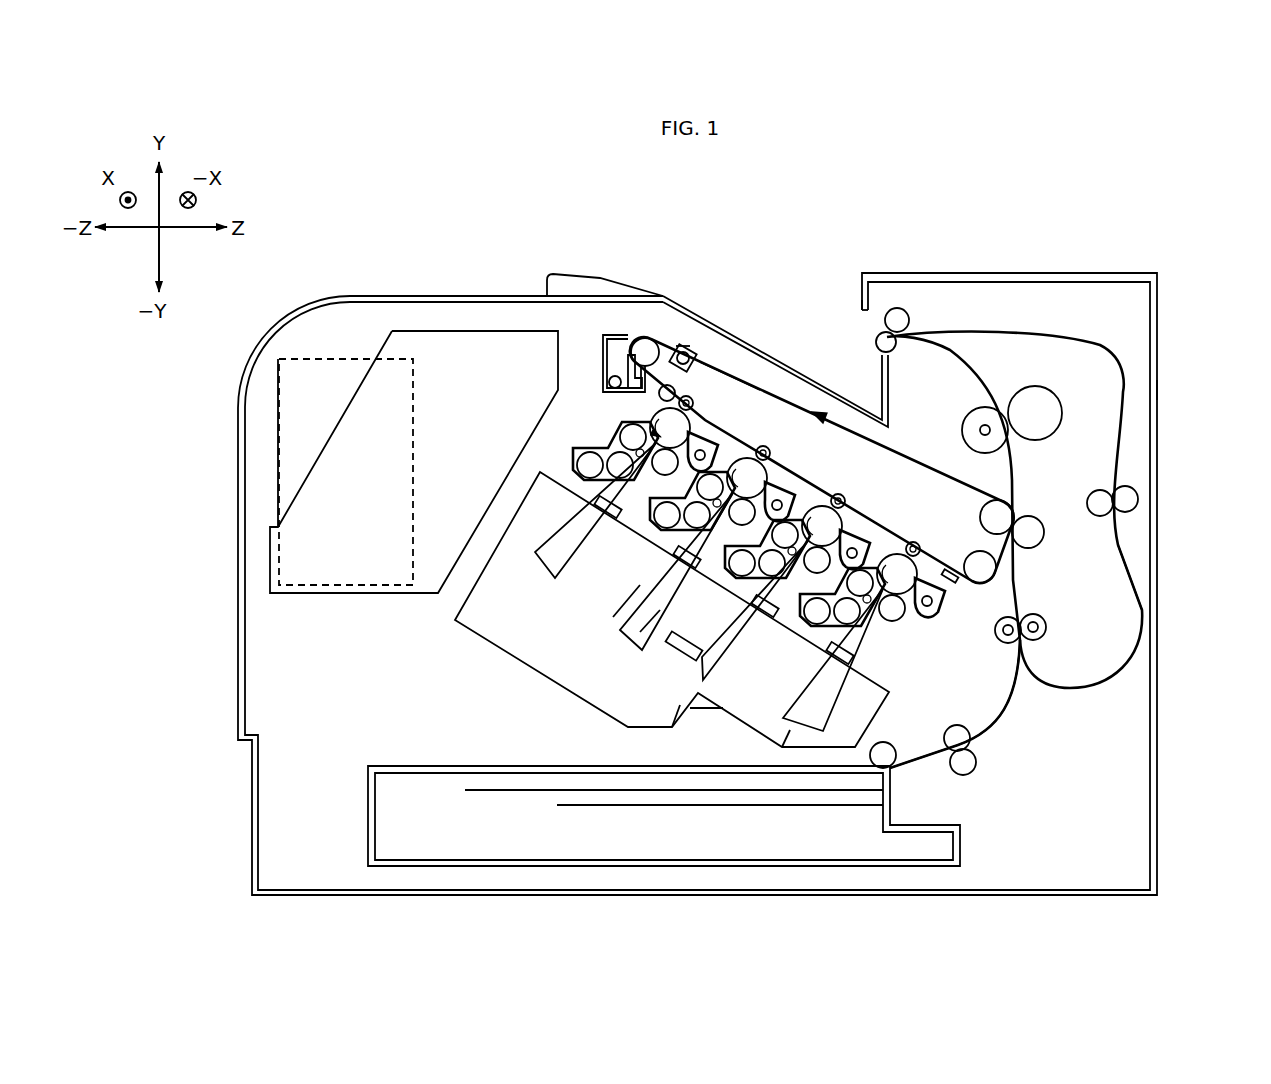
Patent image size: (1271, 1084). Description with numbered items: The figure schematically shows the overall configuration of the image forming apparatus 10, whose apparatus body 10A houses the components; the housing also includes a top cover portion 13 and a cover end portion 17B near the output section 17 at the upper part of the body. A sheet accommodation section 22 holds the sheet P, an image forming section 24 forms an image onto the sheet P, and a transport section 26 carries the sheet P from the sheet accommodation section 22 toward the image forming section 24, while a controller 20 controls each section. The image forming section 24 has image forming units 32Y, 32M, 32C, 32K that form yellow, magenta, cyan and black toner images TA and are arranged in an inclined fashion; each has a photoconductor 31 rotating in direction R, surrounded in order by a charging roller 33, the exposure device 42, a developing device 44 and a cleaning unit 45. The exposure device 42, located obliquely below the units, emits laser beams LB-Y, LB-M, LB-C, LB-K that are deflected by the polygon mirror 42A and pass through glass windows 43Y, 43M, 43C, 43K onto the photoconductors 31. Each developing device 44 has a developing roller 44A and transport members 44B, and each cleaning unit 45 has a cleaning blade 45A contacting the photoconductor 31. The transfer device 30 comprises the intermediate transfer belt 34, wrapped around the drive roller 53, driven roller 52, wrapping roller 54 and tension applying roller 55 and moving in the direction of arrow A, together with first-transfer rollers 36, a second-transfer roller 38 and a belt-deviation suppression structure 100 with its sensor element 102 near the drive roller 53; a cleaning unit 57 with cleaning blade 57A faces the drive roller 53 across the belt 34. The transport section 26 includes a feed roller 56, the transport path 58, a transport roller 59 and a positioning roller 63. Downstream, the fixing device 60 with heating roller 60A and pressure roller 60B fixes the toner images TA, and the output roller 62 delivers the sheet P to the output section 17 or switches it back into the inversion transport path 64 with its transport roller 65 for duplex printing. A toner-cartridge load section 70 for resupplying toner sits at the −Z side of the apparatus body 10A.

The image forming apparatus 10 is at (1181, 270).
The apparatus body 10A is at (1158, 388).
The top cover 13 is at (356, 294).
The output section 17 is at (800, 372).
The cover end portion 17B is at (853, 308).
The controller 20 is at (270, 462).
The sheet accommodation section 22 is at (368, 801).
The image forming section 24 is at (931, 628).
The transport section 26 is at (948, 784).
The transfer device 30 is at (741, 376).
The photoconductor 31 is at (650, 418).
The image forming unit 32Y is at (581, 494).
The image forming unit 32M is at (652, 541).
The image forming unit 32C is at (736, 586).
The image forming unit 32K is at (809, 637).
The charging roller 33 is at (667, 476).
The intermediate transfer belt 34 is at (747, 364).
The first-transfer roller 36 is at (693, 405).
The second-transfer roller 38 is at (1035, 518).
The exposure device 42 is at (528, 668).
The polygon mirror 42A is at (675, 659).
The glass window 43Y is at (576, 520).
The glass window 43M is at (676, 571).
The glass window 43C is at (755, 610).
The glass window 43K is at (833, 660).
The developing device 44 is at (570, 454).
The developing roller 44A is at (575, 446).
The transport member 44B is at (573, 472).
The cleaning unit 45 is at (704, 435).
The cleaning blade 45A is at (912, 594).
The driven roller 52 is at (997, 499).
The drive roller 53 is at (642, 337).
The wrapping roller 54 is at (655, 400).
The tension applying roller 55 is at (998, 568).
The feed roller 56 is at (890, 744).
The cleaning unit 57 is at (601, 375).
The cleaning blade 57A is at (614, 333).
The transport path 58 is at (1020, 724).
The transport roller 59 is at (960, 725).
The fixing device 60 is at (1077, 385).
The heating roller 60A is at (961, 428).
The pressure roller 60B is at (1063, 413).
The output roller 62 is at (884, 322).
The positioning roller 63 is at (1008, 644).
The inversion transport path 64 is at (1120, 548).
The transport roller 65 is at (1105, 492).
The toner-cartridge load section 70 is at (340, 598).
The belt-deviation suppression structure 100 is at (684, 347).
The sensor 102 is at (692, 354).
The sheet P is at (525, 788).
The arrow A is at (843, 424).
The toner image TA is at (952, 582).
The laser beam LB-Y is at (613, 617).
The laser beam LB-M is at (640, 632).
The laser beam LB-C is at (672, 727).
The laser beam LB-K is at (782, 747).